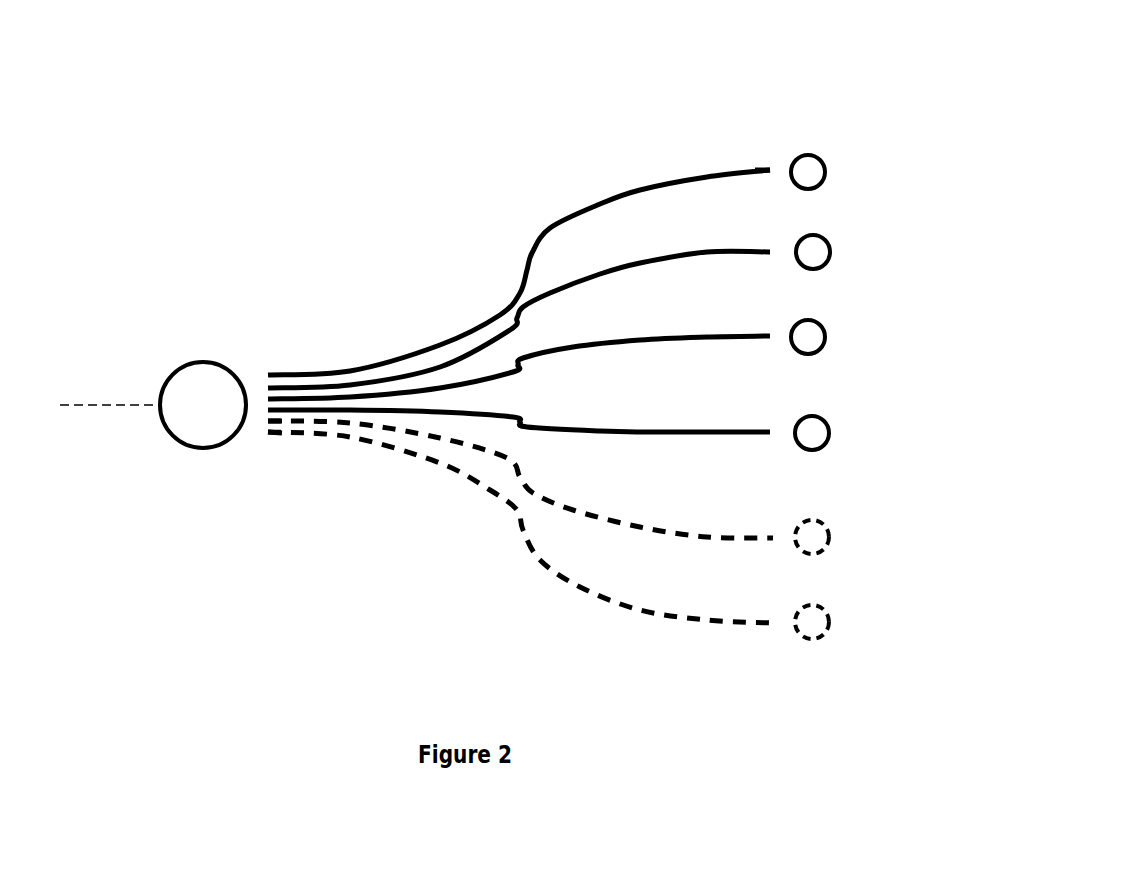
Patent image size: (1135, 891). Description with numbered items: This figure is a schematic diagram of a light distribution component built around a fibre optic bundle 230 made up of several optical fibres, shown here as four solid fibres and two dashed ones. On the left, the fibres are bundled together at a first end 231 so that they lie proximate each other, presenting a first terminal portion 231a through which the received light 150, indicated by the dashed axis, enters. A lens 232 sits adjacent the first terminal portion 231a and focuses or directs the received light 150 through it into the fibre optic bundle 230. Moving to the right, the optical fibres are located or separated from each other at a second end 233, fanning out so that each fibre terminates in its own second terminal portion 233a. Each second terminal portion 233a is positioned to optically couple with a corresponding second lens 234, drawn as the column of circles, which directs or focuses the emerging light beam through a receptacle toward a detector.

The received light 150 is at (110, 400).
The fibre optic bundle 230 is at (525, 330).
The first end 231 is at (328, 467).
The first terminal portion 231a is at (266, 436).
The lens 232 is at (197, 451).
The second end 233 is at (696, 139).
The second terminal portion 233a is at (779, 167).
The second lens 234 is at (832, 333).